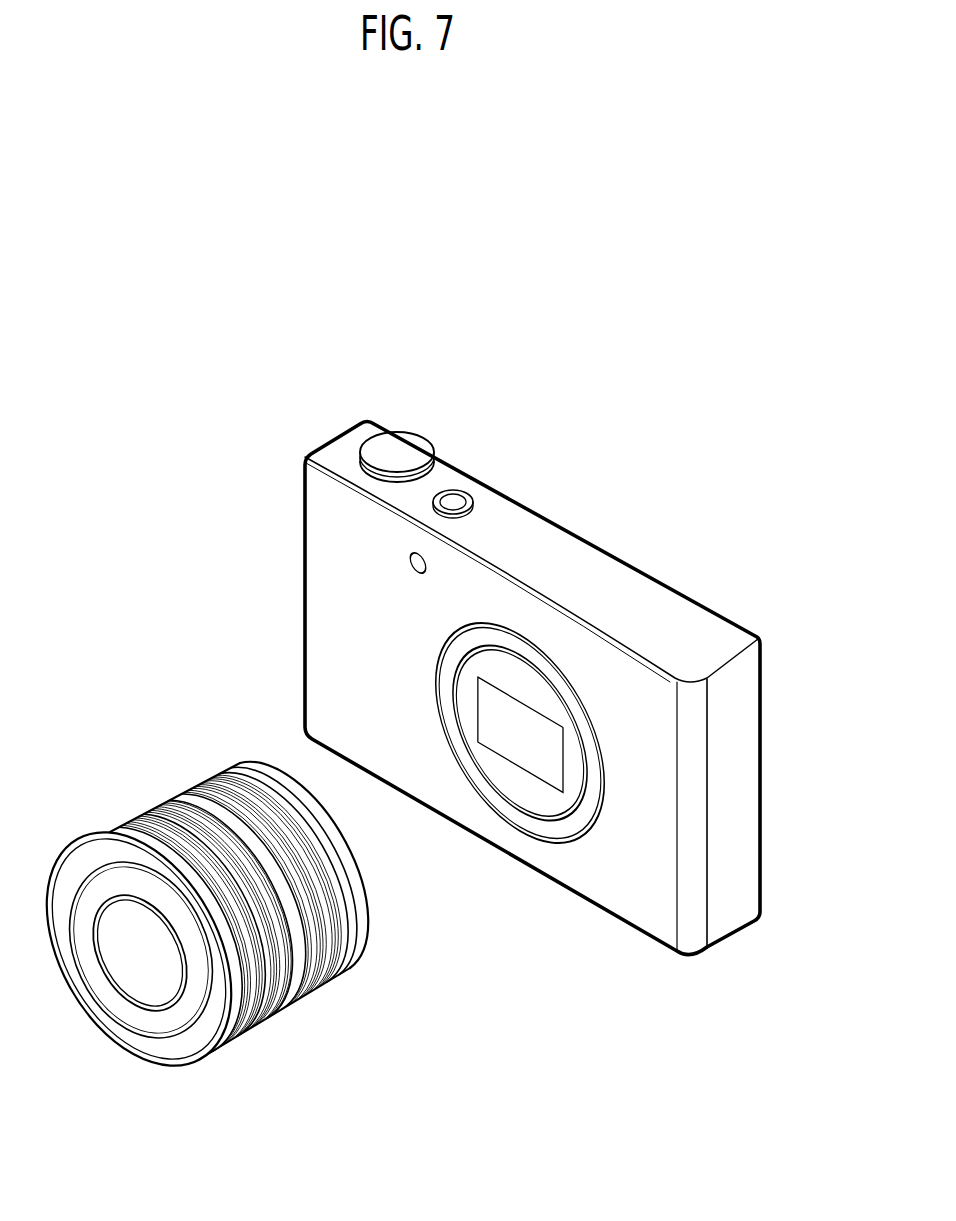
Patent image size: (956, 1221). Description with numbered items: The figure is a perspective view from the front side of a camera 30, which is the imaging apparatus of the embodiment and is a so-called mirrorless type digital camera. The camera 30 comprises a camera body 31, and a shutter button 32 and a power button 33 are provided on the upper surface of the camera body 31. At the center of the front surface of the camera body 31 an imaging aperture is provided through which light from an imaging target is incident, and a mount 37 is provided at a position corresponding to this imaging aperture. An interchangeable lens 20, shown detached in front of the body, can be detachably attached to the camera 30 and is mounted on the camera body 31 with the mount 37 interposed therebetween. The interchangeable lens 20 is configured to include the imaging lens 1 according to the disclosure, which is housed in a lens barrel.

The imaging lens 1 is at (147, 977).
The interchangeable lens 20 is at (188, 940).
The camera 30 is at (568, 658).
The camera body 31 is at (745, 750).
The shutter button 32 is at (405, 443).
The power button 33 is at (450, 503).
The mount 37 is at (548, 826).